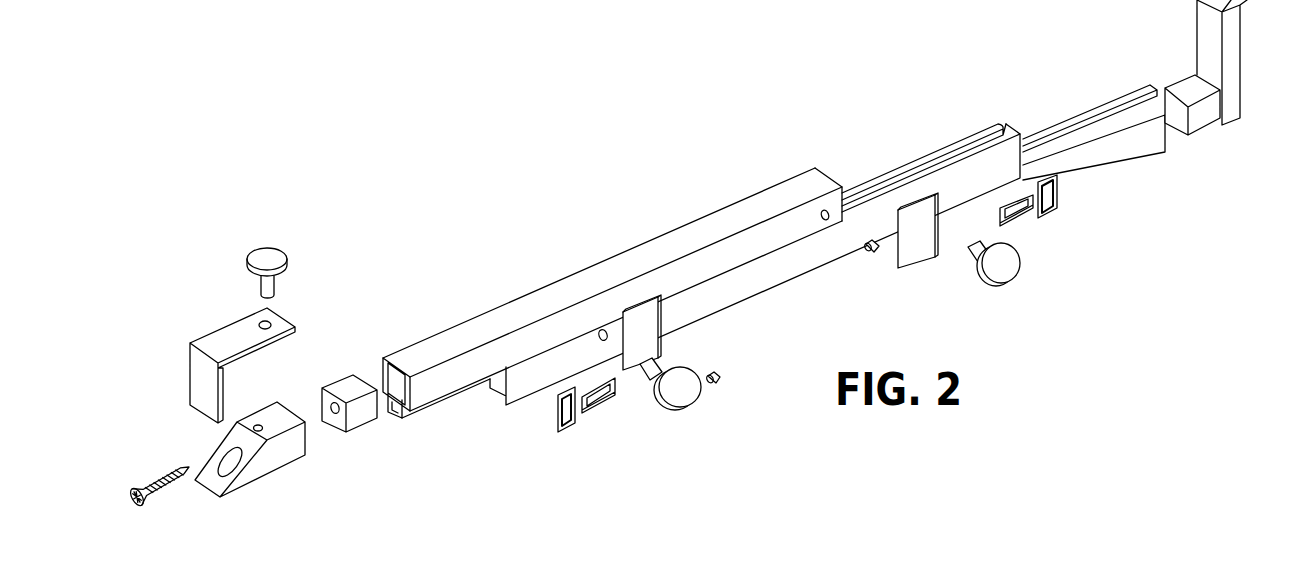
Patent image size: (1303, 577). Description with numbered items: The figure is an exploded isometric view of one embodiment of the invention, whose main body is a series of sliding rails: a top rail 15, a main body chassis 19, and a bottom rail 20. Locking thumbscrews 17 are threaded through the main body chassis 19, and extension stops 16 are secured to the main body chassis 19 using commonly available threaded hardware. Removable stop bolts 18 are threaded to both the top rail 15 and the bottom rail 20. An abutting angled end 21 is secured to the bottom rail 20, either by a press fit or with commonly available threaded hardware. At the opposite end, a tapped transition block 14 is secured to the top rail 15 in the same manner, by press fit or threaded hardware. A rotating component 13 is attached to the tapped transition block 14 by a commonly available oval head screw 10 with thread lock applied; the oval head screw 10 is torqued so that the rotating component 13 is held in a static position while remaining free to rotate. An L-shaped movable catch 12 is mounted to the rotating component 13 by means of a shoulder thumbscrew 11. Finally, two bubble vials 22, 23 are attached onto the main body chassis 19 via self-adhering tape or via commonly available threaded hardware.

The oval head screw 10 is at (142, 508).
The shoulder thumbscrew 11 is at (268, 255).
The L-shaped movable catch 12 is at (218, 338).
The rotating component 13 is at (273, 457).
The tapped transition block 14 is at (362, 412).
The top rail 15 is at (418, 350).
The extension stop 16 is at (655, 310).
The locking thumbscrew 17 is at (683, 398).
The removable stop bolt 18 is at (718, 382).
The main body chassis 19 is at (987, 133).
The bottom rail 20 is at (1150, 147).
The abutting angled end 21 is at (1232, 50).
The bubble vial 22 is at (603, 403).
The bubble vial 23 is at (562, 430).